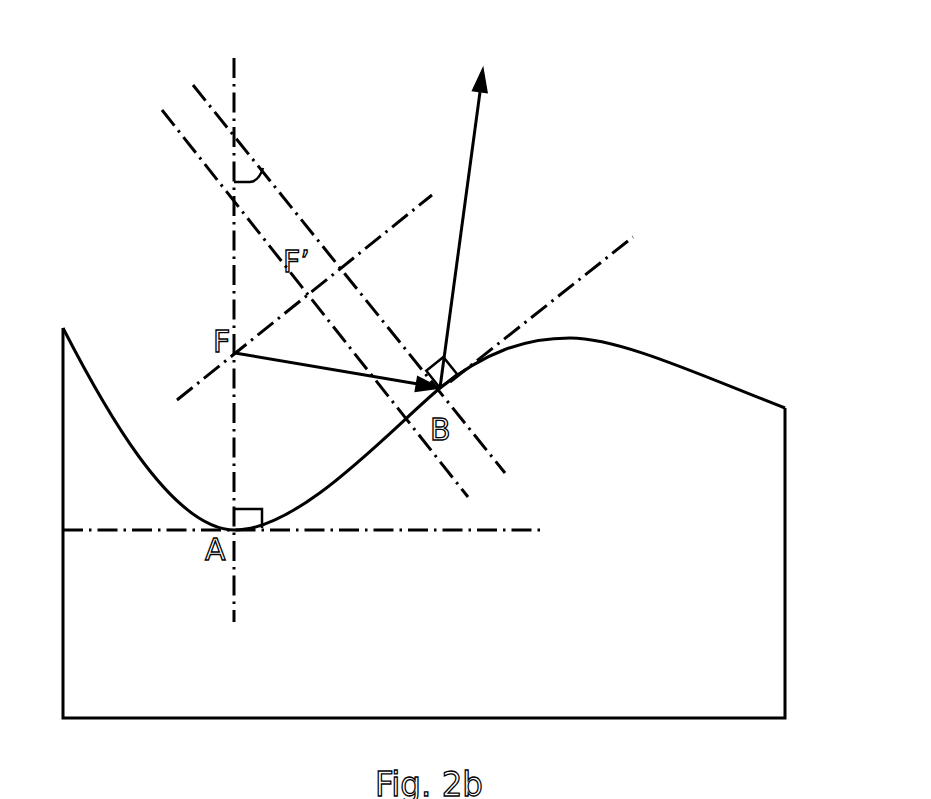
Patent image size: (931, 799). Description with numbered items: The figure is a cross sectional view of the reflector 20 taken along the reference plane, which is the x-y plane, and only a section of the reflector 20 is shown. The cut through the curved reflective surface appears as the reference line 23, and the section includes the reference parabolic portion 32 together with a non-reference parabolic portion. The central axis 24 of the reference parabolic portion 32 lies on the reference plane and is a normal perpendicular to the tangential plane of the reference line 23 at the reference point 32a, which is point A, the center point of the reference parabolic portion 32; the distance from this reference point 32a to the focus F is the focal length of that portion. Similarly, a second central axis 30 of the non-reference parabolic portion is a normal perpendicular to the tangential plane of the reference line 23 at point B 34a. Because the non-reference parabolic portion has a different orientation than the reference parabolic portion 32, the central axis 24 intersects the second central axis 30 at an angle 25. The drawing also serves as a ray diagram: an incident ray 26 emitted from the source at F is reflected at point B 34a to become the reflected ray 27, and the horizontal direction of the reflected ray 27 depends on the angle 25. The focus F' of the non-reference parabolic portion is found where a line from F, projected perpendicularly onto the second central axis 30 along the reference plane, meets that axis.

The reflector 20 is at (655, 682).
The reference line 23 is at (653, 353).
The central axis 24 is at (234, 291).
The angle 25 is at (245, 157).
The incident ray 26 is at (337, 388).
The reflected ray 27 is at (480, 228).
The second central axis 30 is at (178, 130).
The reference parabolic portion 32 is at (301, 664).
The reference point 32a is at (240, 535).
The point B 34a is at (452, 393).